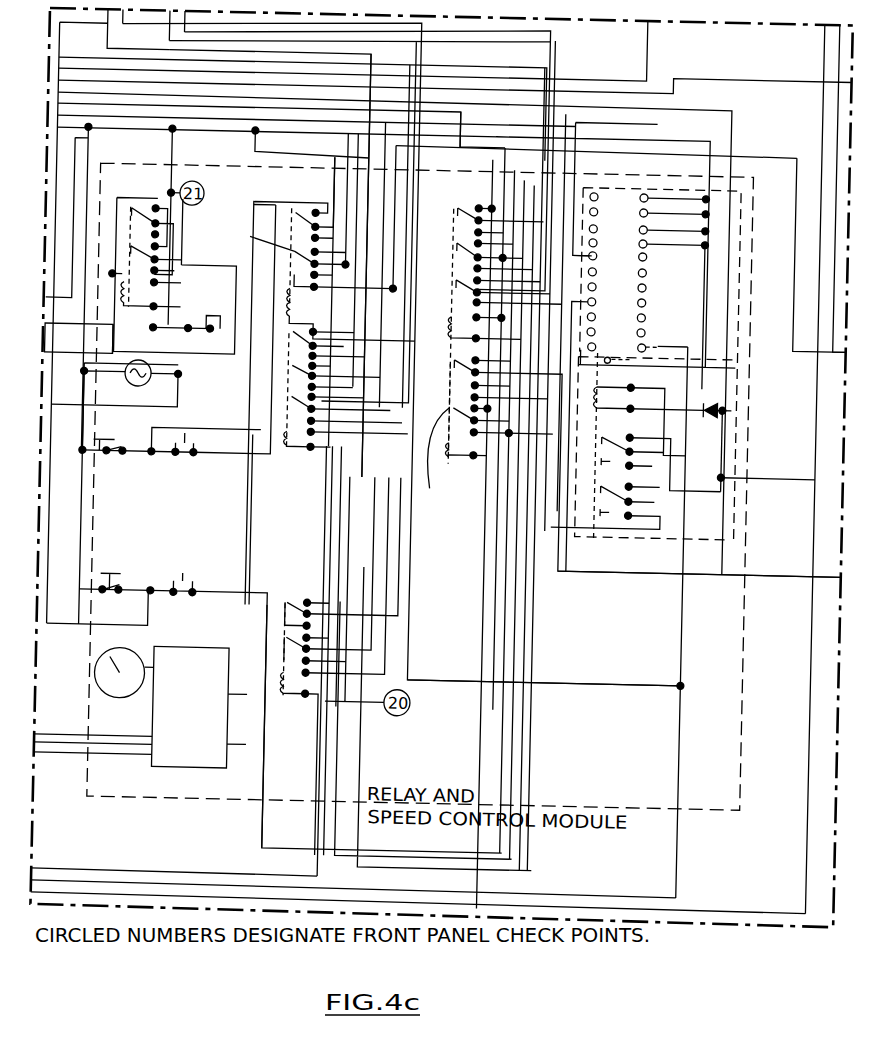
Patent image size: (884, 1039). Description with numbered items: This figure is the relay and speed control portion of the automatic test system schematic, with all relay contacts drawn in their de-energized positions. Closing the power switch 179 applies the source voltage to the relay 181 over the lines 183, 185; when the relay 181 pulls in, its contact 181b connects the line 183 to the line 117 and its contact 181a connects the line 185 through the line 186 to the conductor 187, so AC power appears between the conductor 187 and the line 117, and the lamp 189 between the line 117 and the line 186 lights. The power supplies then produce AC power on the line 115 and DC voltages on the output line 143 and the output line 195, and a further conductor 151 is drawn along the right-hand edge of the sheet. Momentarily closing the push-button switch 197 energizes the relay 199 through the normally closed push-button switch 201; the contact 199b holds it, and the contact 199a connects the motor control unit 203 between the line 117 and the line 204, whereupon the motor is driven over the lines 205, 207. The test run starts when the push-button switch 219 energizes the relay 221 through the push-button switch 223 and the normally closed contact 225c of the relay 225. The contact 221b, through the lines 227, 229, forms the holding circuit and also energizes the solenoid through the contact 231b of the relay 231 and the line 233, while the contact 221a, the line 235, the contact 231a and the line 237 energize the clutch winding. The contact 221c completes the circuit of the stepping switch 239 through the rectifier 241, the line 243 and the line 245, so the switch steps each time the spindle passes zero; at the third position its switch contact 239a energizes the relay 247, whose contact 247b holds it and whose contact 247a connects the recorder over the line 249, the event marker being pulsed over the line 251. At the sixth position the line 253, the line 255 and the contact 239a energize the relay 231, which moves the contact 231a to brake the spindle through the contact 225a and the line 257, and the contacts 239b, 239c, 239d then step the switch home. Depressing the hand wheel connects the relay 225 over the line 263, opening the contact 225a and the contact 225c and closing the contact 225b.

The line 115 is at (712, 62).
The line 117 is at (141, 129).
The output line 143 is at (823, 44).
The conductor 151 is at (840, 80).
The power switch 179 is at (211, 316).
The relay 181 is at (172, 262).
The contact 181a is at (150, 204).
The contact 181b is at (166, 244).
The line 183 is at (140, 324).
The line 185 is at (78, 338).
The line 186 is at (168, 406).
The conductor 187 is at (221, 133).
The lamp 189 is at (168, 365).
The output line 195 is at (640, 41).
The push-button switch 197 is at (122, 451).
The relay 199 is at (310, 381).
The contact 199a is at (305, 206).
The contact 199b is at (280, 242).
The push-button switch 201 is at (197, 455).
The motor control unit 203 is at (240, 759).
The line 204 is at (95, 731).
The line 205 is at (165, 756).
The line 207 is at (135, 728).
The push-button switch 219 is at (130, 577).
The relay 221 is at (299, 401).
The contact 221a is at (300, 343).
The contact 221b is at (300, 376).
The contact 221c is at (298, 398).
The push-button switch 223 is at (202, 578).
The relay 225 is at (483, 318).
The contact 225a is at (464, 204).
The contact 225b is at (464, 240).
The contact 225c is at (464, 276).
The line 227 is at (158, 52).
The line 229 is at (75, 500).
The relay 231 is at (297, 664).
The contact 231a is at (300, 594).
The contact 231b is at (298, 638).
The line 233 is at (463, 138).
The line 235 is at (421, 14).
The line 237 is at (421, 34).
The stepping switch 239 is at (644, 447).
The switch contact 239a is at (622, 359).
The contact 239b is at (648, 334).
The contact 239c is at (612, 428).
The contact 239d is at (613, 475).
The rectifier 241 is at (715, 406).
The line 243 is at (393, 93).
The line 245 is at (696, 631).
The relay 247 is at (623, 466).
The contact 247a is at (465, 356).
The contact 247b is at (452, 474).
The line 249 is at (631, 562).
The line 251 is at (793, 463).
The line 253 is at (98, 868).
The line 255 is at (593, 103).
The line 257 is at (552, 42).
The line 263 is at (108, 78).